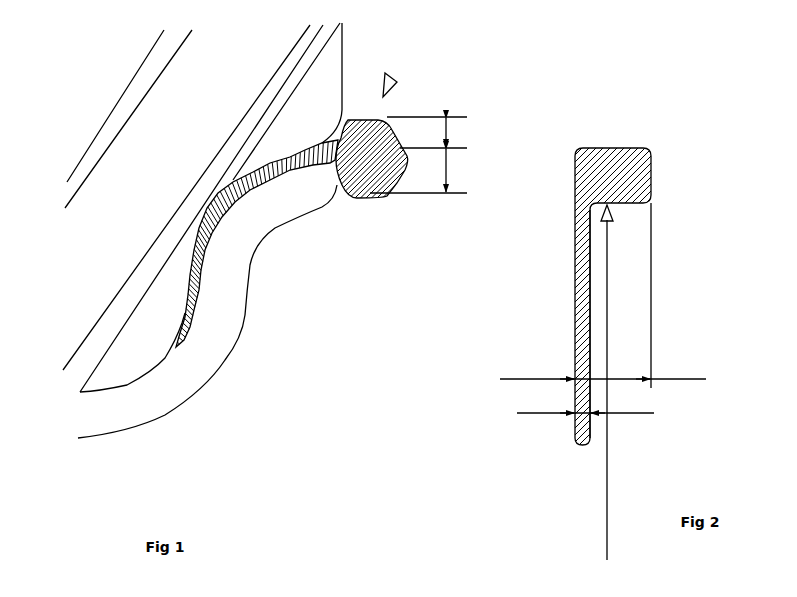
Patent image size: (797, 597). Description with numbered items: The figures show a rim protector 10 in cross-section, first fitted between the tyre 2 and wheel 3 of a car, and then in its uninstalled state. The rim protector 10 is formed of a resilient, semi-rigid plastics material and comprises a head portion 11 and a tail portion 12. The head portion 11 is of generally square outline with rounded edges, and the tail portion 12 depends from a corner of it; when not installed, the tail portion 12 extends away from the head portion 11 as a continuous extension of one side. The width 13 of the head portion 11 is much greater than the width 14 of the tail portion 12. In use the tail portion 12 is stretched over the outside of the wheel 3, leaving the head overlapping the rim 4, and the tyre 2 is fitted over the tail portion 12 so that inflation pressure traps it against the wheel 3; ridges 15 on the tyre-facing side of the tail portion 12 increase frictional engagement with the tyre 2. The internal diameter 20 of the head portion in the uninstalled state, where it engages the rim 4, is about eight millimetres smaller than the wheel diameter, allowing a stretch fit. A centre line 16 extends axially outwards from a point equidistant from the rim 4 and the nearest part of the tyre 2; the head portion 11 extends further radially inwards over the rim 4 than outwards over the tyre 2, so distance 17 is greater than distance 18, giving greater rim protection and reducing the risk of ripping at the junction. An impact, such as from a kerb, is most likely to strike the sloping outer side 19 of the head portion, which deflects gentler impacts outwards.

In FIG. 1, the tyre 2 is at (346, 42).
In FIG. 1, the wheel 3 is at (199, 395).
In FIG. 1, the rim 4 is at (334, 190).
In FIG. 1, the rim protector 10 is at (388, 88).
In FIG. 1, the head portion 11 is at (379, 156).
In FIG. 2, the head portion 11 is at (627, 173).
In FIG. 1, the tail portion 12 is at (248, 187).
In FIG. 2, the tail portion 12 is at (595, 273).
In FIG. 2, the width of the head portion 13 is at (615, 295).
In FIG. 2, the width of the tail portion 14 is at (596, 409).
In FIG. 1, the ridges 15 is at (260, 165).
In FIG. 2, the ridges 15 is at (572, 249).
In FIG. 1, the centre line 16 is at (471, 147).
In FIG. 1, the distance 17 is at (419, 171).
In FIG. 1, the distance 18 is at (428, 132).
In FIG. 1, the outer side of the head portion 19 is at (388, 123).
In FIG. 2, the internal diameter 20 is at (603, 393).